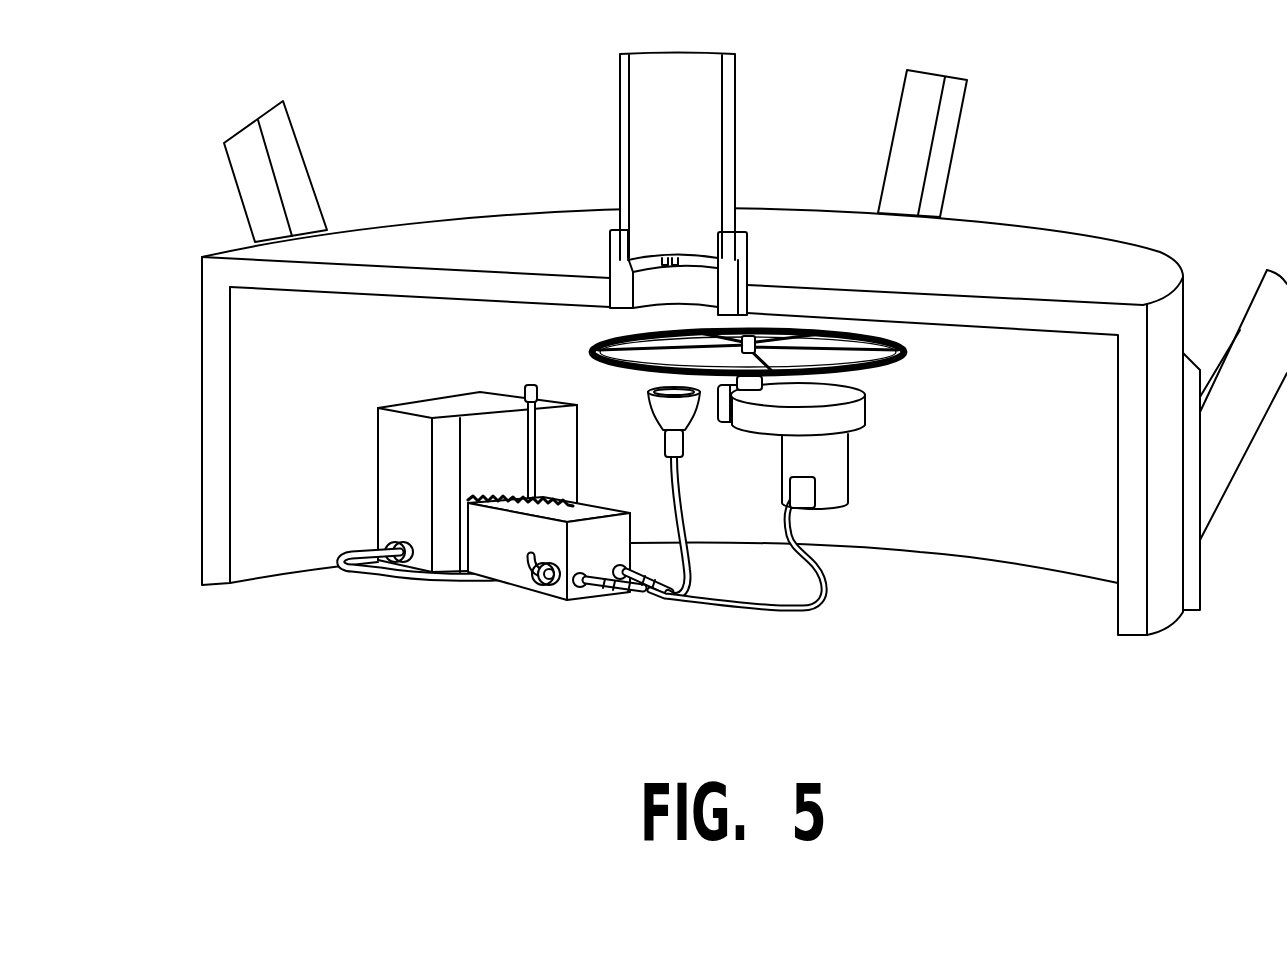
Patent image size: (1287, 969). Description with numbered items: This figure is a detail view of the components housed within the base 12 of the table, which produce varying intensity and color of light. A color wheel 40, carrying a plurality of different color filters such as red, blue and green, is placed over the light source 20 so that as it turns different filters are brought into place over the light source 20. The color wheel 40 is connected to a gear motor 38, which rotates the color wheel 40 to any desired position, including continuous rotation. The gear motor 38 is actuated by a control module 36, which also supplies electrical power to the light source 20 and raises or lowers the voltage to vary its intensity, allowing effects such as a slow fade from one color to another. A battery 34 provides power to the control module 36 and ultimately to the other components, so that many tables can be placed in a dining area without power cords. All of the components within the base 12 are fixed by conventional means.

The base 12 is at (475, 215).
The light source 20 is at (683, 458).
The battery 34 is at (430, 520).
The control module 36 is at (578, 600).
The gear motor 38 is at (840, 477).
The color wheel 40 is at (912, 338).